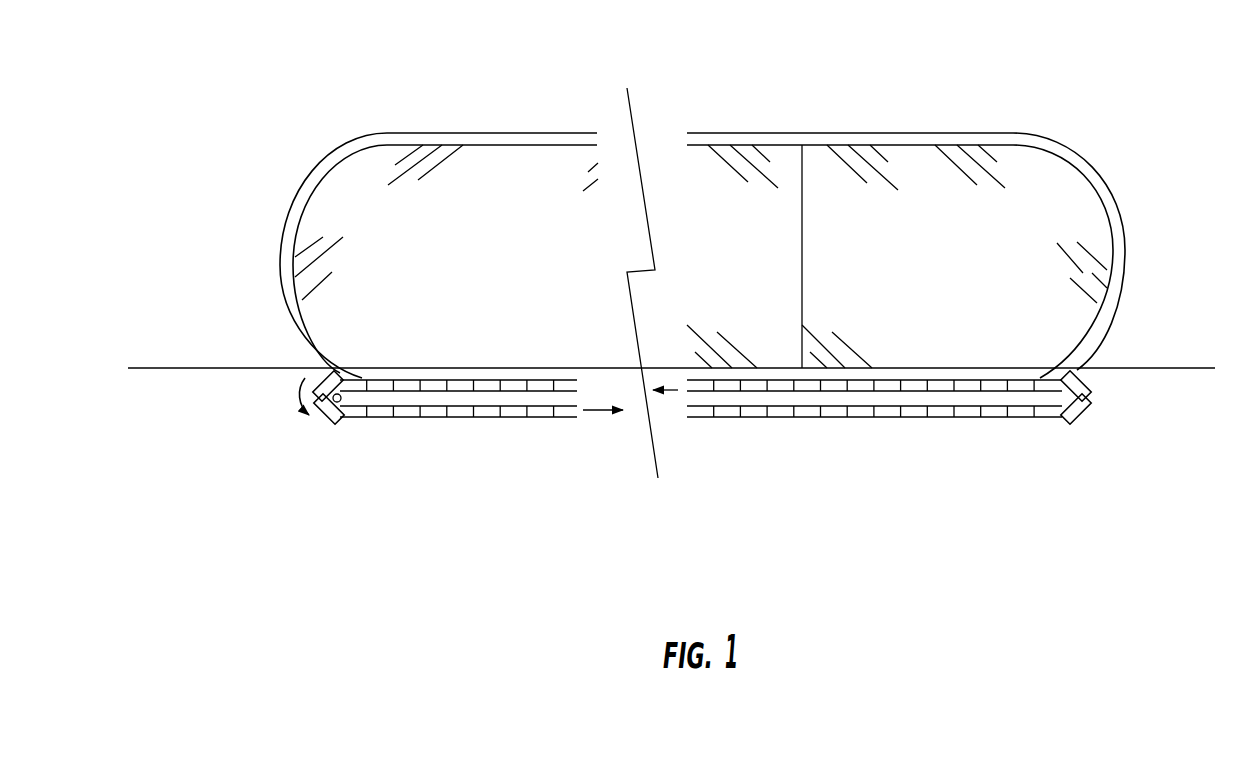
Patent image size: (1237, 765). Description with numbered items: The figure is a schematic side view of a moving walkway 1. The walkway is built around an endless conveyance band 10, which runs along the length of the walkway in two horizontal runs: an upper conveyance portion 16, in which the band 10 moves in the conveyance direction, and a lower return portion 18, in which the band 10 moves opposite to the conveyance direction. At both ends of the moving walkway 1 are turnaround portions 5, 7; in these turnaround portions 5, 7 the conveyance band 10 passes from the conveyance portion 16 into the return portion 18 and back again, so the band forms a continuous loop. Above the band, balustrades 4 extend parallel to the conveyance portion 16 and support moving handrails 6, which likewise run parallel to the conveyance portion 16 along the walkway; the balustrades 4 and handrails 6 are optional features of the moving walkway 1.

The moving walkway 1 is at (258, 144).
The balustrade 4 is at (490, 190).
The moving handrail 6 is at (1017, 133).
The conveyance portion 16 is at (916, 364).
The conveyance band 10 is at (436, 416).
The return portion 18 is at (838, 441).
The turnaround portion 5 is at (303, 434).
The turnaround portion 7 is at (1089, 422).